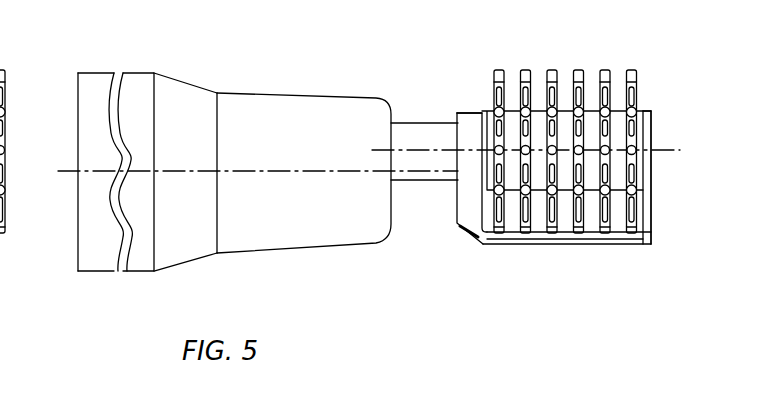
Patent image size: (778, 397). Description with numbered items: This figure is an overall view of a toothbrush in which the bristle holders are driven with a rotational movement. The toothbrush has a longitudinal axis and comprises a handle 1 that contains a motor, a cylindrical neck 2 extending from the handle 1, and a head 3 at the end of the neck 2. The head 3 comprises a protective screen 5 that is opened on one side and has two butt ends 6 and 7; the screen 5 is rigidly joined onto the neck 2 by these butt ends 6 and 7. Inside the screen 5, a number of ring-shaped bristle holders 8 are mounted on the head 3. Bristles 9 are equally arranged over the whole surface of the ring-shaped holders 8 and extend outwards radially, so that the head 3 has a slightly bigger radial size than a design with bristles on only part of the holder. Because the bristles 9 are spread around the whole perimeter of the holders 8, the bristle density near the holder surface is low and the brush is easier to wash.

The handle 1 is at (112, 243).
The cylindrical neck 2 is at (403, 163).
The head 3 is at (652, 97).
The protective screen 5 is at (549, 236).
The butt end 6 is at (467, 233).
The butt end 7 is at (648, 210).
The ring-shaped bristle holder 8 is at (515, 184).
The bristles 9 is at (552, 100).